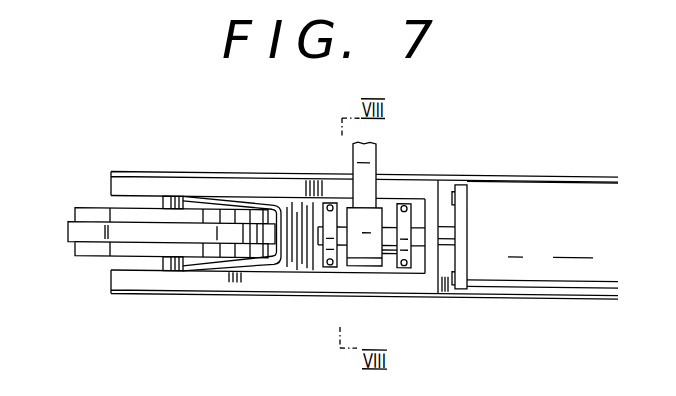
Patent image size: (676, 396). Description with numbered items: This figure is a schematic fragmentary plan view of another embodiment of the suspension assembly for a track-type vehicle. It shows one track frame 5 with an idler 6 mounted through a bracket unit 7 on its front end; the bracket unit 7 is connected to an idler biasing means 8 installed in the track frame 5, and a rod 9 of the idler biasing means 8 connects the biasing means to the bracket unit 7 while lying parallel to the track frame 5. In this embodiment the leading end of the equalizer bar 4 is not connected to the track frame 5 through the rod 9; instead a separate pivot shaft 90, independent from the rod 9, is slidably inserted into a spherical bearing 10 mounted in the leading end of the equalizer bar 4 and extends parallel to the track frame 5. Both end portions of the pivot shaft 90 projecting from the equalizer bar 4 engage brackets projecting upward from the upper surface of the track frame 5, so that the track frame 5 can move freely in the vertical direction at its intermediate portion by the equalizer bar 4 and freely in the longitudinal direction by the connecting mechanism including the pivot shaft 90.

The equalizer bar 4 is at (374, 150).
The track frame 5 is at (274, 172).
The idler 6 is at (73, 243).
The bracket unit 7 is at (203, 178).
The idler biasing means 8 is at (549, 164).
The rod 9 is at (448, 247).
The spherical bearing 10 is at (350, 256).
The pivot shaft 90 is at (388, 250).